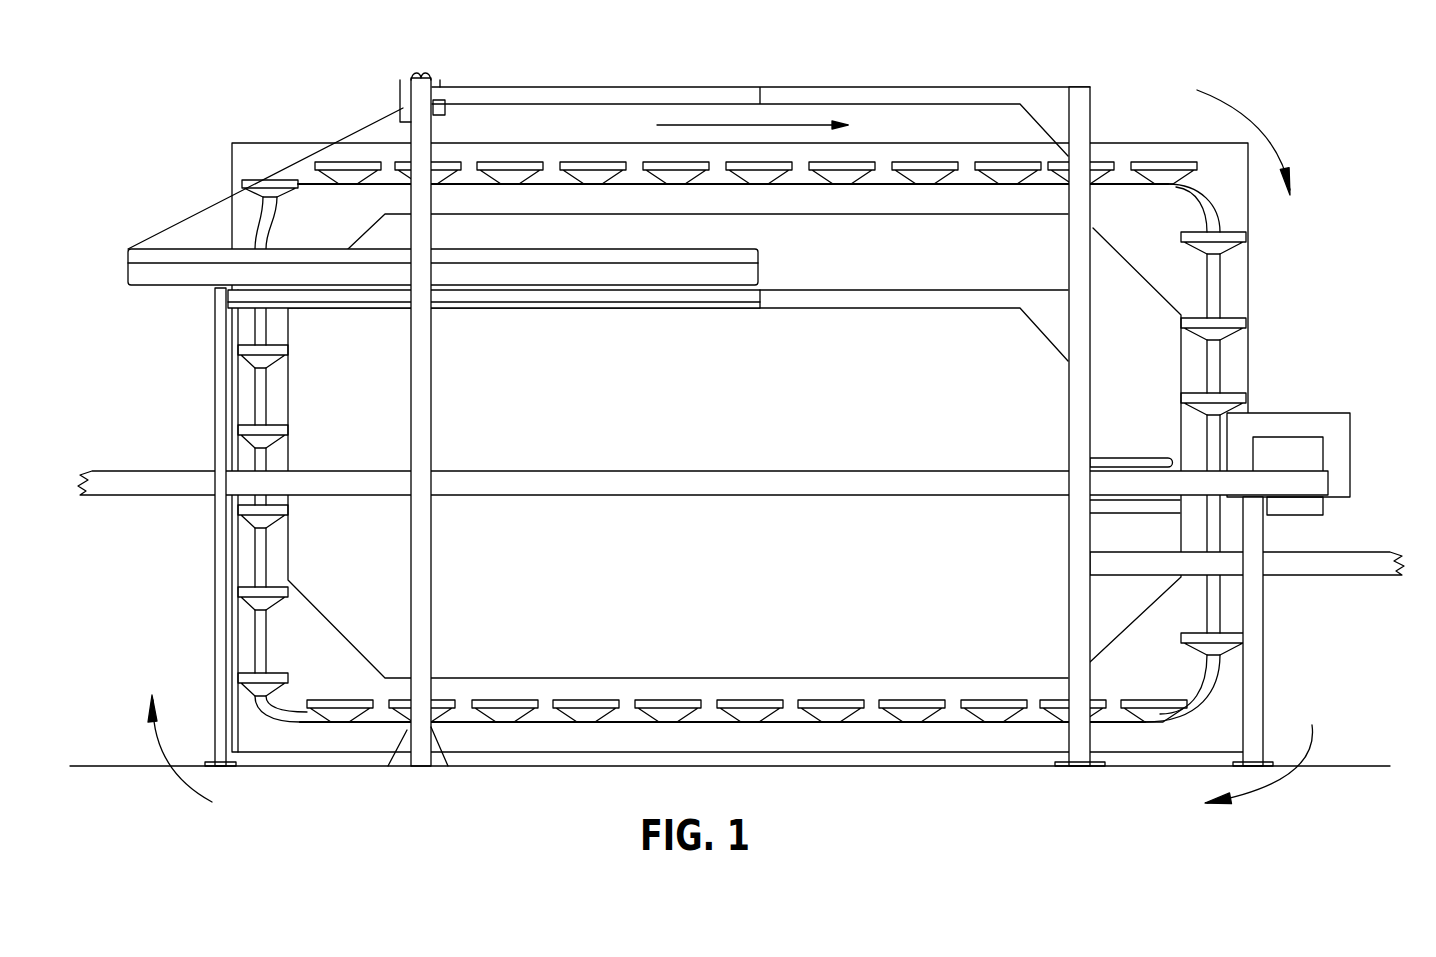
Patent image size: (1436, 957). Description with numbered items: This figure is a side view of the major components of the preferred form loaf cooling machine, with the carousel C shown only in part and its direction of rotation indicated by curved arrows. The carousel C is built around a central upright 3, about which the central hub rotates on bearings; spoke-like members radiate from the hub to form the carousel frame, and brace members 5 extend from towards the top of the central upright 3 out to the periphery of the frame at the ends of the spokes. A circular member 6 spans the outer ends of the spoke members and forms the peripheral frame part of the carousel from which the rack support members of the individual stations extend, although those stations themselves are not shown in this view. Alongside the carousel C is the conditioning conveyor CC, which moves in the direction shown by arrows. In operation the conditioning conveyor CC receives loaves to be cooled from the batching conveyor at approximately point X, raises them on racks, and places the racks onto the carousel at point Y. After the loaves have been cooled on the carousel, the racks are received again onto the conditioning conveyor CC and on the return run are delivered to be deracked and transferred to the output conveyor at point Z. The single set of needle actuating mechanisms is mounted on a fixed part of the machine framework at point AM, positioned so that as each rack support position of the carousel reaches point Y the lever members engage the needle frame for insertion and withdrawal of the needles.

The central upright 3 is at (420, 418).
The brace members 5 is at (362, 128).
The circular member 6 is at (442, 110).
The carousel C is at (202, 205).
The conditioning conveyor CC is at (1142, 157).
The actuating mechanism point AM is at (178, 296).
The loaf input point X is at (1097, 538).
The rack transfer point Y is at (208, 302).
The output point Z is at (1175, 457).